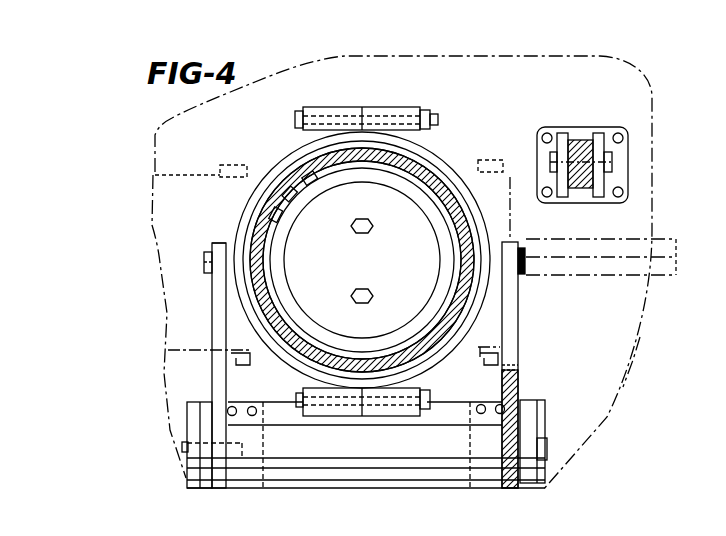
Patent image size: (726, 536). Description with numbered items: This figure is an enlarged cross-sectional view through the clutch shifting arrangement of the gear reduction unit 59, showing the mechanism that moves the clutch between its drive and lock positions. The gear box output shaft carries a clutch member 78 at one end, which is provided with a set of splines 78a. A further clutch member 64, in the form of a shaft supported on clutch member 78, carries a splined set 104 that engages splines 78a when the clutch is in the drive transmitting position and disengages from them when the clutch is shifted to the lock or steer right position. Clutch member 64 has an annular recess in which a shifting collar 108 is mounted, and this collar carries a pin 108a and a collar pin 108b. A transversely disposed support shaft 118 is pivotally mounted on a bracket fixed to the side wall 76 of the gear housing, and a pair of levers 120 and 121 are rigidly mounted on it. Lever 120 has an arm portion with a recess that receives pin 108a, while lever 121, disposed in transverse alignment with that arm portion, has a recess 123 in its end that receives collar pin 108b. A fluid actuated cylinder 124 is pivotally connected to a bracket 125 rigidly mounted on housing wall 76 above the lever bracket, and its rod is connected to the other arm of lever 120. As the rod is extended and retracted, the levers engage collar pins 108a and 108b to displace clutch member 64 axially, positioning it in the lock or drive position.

The gear reduction unit 59 is at (725, 219).
The clutch member 64 is at (262, 214).
The side wall 76 is at (618, 355).
The clutch member 78 is at (284, 272).
The splines 78a is at (313, 178).
The splined set 104 is at (285, 192).
The shifting collar 108 is at (436, 143).
The pin 108a is at (522, 278).
The collar pin 108b is at (205, 263).
The support shaft 118 is at (472, 433).
The lever 120 is at (510, 329).
The lever 121 is at (212, 360).
The recess 123 is at (210, 244).
The cylinder 124 is at (576, 140).
The bracket 125 is at (620, 155).